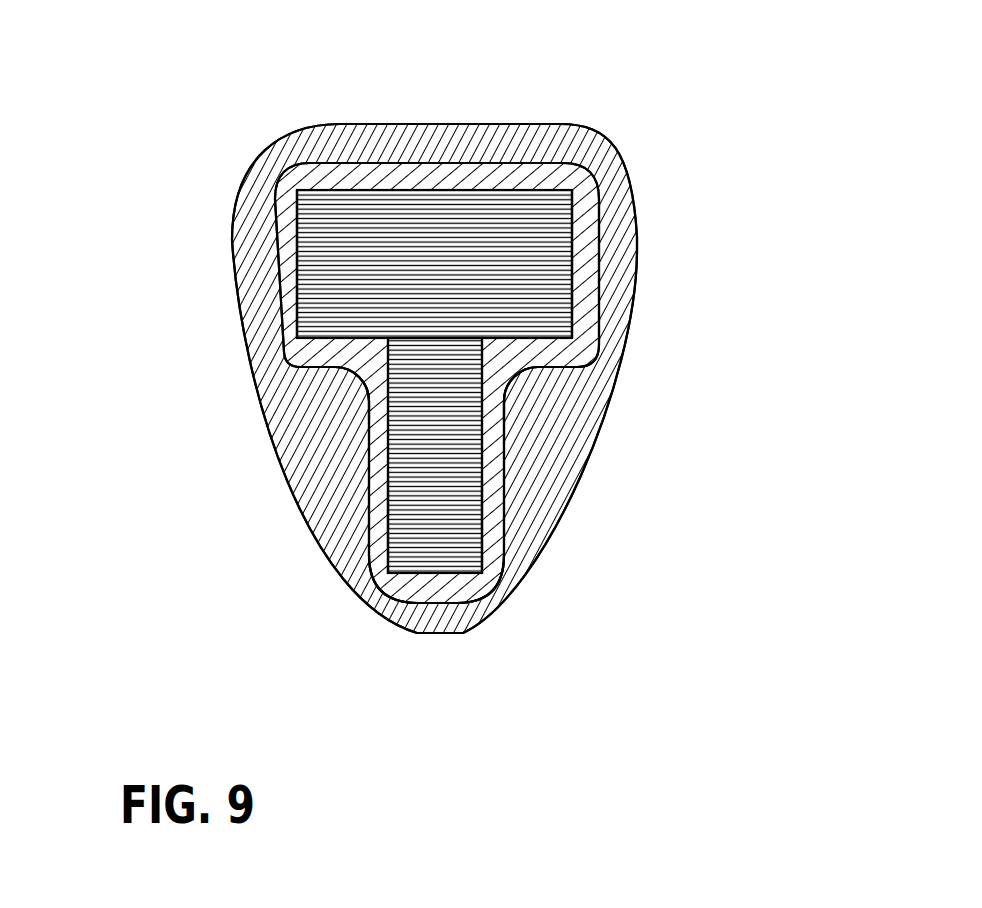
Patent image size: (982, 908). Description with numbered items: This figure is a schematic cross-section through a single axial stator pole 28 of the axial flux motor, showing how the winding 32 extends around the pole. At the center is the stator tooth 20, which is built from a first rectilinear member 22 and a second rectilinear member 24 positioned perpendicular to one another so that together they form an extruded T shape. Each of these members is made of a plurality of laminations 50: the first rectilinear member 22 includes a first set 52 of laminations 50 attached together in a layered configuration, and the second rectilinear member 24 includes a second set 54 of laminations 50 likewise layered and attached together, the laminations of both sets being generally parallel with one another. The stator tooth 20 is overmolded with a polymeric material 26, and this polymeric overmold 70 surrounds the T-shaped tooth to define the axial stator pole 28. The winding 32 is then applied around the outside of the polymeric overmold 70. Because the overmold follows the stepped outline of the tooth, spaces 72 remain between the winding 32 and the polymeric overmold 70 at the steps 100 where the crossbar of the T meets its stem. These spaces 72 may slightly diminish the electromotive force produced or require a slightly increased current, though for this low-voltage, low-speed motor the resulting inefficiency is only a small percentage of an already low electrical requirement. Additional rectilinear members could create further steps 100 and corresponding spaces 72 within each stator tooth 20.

The stator tooth 20 is at (435, 353).
The first rectilinear member 22 is at (543, 223).
The second rectilinear member 24 is at (413, 458).
The polymeric material 26 is at (405, 182).
The axial stator pole 28 is at (292, 383).
The winding 32 is at (280, 167).
The laminations 50 is at (295, 265).
The first set of laminations 52 is at (574, 303).
The second set of laminations 54 is at (440, 523).
The polymeric overmold 70 is at (393, 580).
The spaces 72 is at (343, 403).
The steps 100 is at (537, 373).